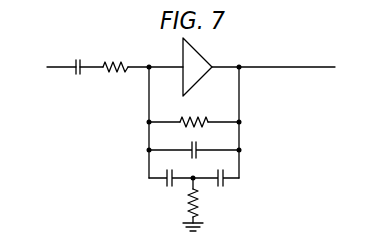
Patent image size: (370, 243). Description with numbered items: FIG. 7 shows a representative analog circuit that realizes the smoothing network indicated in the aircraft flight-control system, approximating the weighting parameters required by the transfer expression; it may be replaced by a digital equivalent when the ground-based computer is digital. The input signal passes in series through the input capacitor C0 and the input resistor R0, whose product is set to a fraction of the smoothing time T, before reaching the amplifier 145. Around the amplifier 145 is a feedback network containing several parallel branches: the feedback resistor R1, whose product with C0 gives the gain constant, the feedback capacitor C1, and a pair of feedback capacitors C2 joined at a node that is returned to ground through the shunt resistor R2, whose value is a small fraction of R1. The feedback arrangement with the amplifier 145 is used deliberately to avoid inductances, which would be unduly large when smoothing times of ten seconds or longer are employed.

The input capacitor C0 is at (70, 58).
The input resistor R0 is at (115, 57).
The amplifier 145 is at (203, 58).
The feedback resistor R1 is at (194, 112).
The feedback capacitor C1 is at (194, 146).
The feedback capacitors C2 is at (194, 185).
The shunt resistor R2 is at (202, 204).